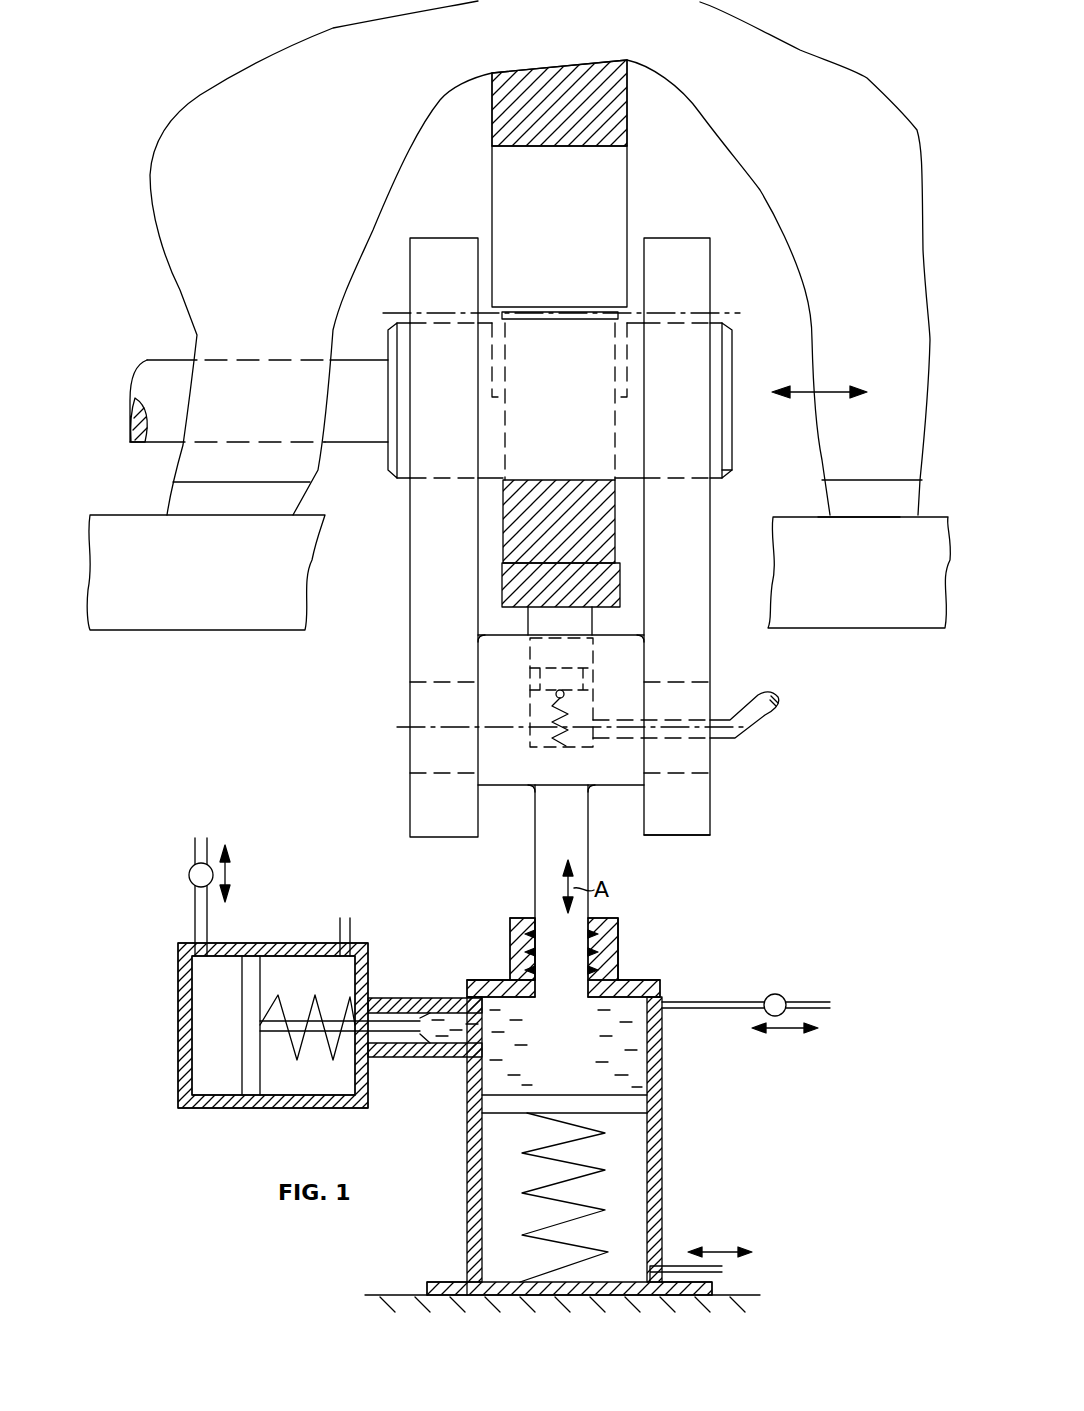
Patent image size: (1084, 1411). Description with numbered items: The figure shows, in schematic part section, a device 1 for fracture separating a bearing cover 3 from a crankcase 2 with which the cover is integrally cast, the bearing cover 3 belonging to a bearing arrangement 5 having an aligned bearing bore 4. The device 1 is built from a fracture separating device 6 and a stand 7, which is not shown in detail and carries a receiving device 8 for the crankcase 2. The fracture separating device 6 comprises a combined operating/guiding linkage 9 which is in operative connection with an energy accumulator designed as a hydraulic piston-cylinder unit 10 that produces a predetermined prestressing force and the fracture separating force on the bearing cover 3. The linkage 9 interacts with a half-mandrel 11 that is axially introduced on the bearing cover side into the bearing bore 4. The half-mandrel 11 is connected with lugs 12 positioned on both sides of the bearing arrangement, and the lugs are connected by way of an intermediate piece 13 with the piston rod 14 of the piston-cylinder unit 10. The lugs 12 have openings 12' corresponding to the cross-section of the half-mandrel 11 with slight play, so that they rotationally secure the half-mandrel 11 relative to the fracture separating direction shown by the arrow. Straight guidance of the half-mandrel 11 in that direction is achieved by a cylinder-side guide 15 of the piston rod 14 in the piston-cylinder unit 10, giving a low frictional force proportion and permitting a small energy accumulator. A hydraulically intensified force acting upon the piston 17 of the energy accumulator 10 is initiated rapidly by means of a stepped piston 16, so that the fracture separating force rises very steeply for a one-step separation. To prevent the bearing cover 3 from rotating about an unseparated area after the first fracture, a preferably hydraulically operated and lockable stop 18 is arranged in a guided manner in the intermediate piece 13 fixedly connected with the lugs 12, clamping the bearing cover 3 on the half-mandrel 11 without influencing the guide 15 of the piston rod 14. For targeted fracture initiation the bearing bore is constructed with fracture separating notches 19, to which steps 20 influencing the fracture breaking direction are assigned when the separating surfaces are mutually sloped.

The device 1 is at (878, 1072).
The crankcase 2 is at (835, 80).
The bearing cover 3 is at (610, 540).
The bearing bore 4 is at (614, 148).
The bearing arrangement 5 is at (492, 141).
The fracture separating device 6 is at (230, 785).
The stand 7 is at (885, 618).
The receiving device 8 is at (920, 512).
The combined operating/guiding linkage 9 is at (712, 826).
The hydraulic piston-cylinder unit 10 is at (662, 1148).
The half-mandrel 11 is at (718, 354).
The lugs 12 is at (560, 537).
The openings 12' is at (733, 458).
The intermediate piece 13 is at (518, 778).
The piston rod 14 is at (535, 840).
The cylinder-side guide 15 is at (620, 930).
The stepped piston 16 is at (295, 1015).
The piston 17 is at (484, 1115).
The stop 18 is at (608, 598).
The fracture separating notches 19 is at (565, 320).
The steps 20 is at (632, 318).